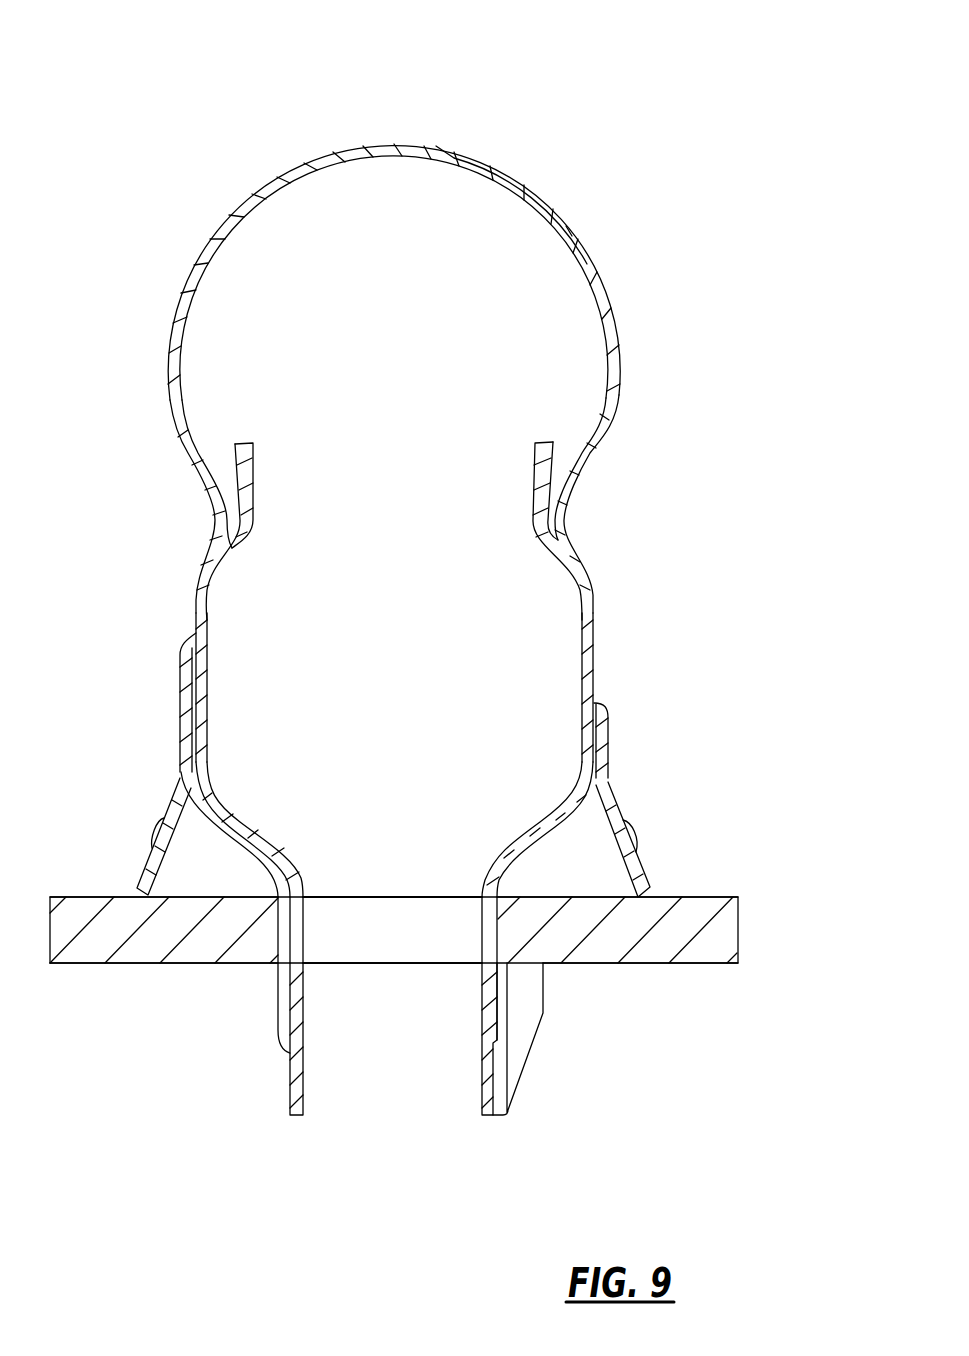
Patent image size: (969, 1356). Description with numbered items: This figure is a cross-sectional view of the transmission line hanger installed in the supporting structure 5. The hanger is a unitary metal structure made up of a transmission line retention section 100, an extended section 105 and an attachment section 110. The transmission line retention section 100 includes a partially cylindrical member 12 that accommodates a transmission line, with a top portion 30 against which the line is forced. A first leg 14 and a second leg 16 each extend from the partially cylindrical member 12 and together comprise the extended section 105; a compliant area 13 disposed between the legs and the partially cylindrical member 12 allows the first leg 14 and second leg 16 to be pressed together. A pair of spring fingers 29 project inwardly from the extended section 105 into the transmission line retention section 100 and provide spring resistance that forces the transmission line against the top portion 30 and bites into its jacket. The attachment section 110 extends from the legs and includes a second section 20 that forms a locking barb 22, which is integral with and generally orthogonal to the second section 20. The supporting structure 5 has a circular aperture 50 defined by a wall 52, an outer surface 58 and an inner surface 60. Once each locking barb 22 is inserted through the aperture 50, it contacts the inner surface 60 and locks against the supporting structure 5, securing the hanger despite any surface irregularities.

The supporting structure 5 is at (742, 933).
The partially cylindrical member 12 is at (405, 145).
The compliant area 13 is at (214, 522).
The first leg 14 is at (588, 660).
The second leg 16 is at (201, 672).
The second section 20 is at (295, 1095).
The locking barb 22 is at (530, 996).
The spring fingers 29 is at (248, 487).
The top portion 30 is at (433, 145).
The circular aperture 50 is at (396, 868).
The wall 52 is at (378, 942).
The outer surface 58 is at (705, 895).
The inner surface 60 is at (664, 966).
The transmission line retention section 100 is at (453, 593).
The extended section 105 is at (688, 660).
The attachment section 110 is at (596, 1039).